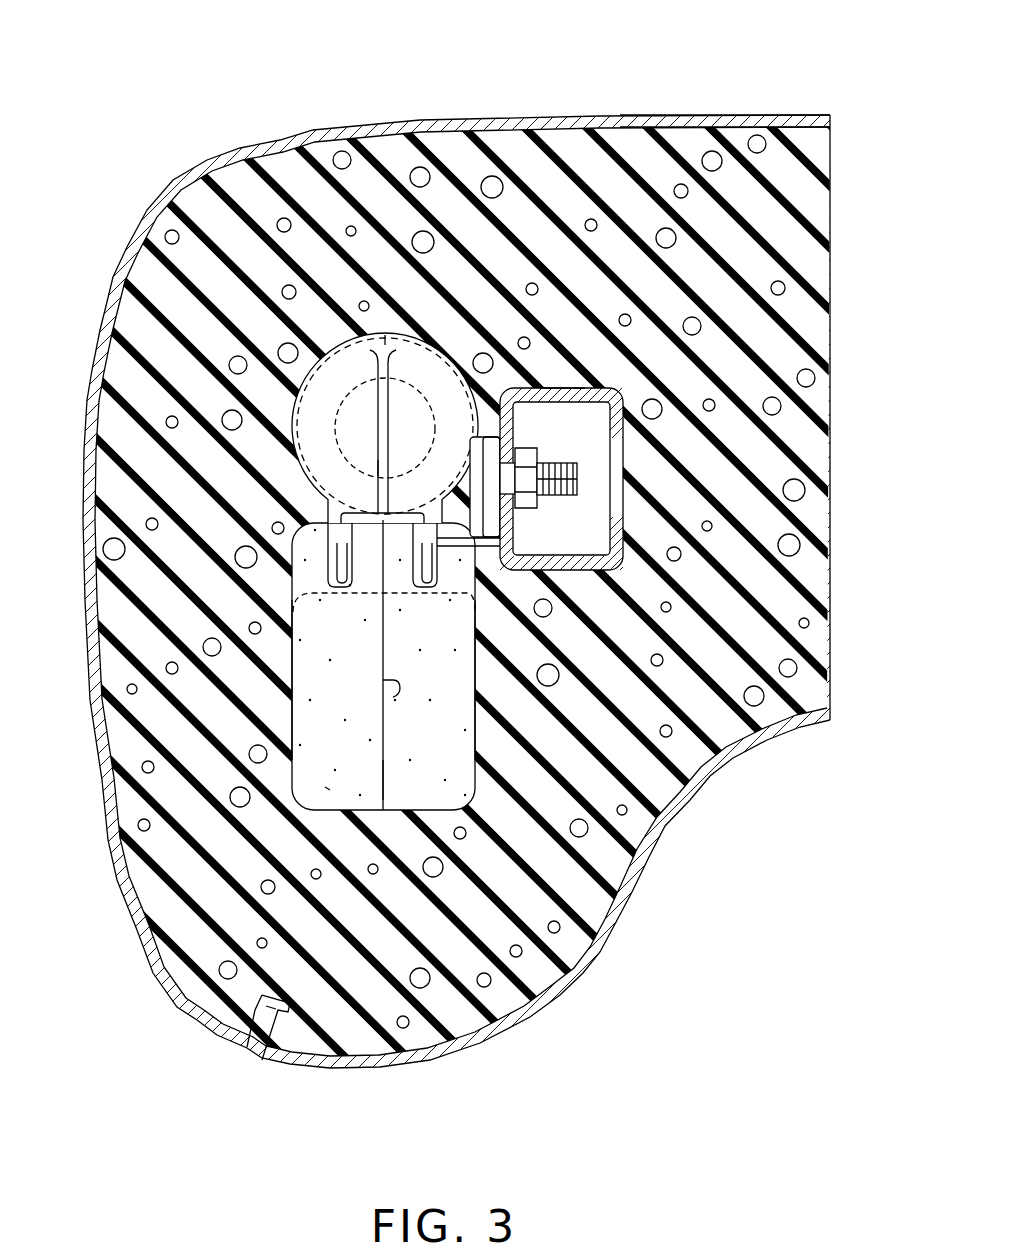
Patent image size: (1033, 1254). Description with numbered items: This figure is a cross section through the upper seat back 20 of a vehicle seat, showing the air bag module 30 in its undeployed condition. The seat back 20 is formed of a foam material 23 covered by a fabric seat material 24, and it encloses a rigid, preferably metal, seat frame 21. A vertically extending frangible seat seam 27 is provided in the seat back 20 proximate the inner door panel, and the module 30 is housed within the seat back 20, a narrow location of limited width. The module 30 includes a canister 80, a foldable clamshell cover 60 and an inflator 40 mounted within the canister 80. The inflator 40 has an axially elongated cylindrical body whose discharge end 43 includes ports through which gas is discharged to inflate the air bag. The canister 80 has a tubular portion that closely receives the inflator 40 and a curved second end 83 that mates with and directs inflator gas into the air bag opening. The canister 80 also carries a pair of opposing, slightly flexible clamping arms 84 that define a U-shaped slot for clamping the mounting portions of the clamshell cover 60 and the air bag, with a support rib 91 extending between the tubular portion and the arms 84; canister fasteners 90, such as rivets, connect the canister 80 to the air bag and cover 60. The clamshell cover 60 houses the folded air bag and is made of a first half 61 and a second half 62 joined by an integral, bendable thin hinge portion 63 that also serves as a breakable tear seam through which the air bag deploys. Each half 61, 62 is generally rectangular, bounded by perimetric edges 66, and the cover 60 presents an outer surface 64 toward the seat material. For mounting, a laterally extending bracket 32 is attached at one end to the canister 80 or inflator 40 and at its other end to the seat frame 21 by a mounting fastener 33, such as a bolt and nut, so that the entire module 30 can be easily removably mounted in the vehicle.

The seat back 20 is at (178, 175).
The seat frame 21 is at (562, 388).
The foam material 23 is at (828, 155).
The fabric seat material 24 is at (781, 117).
The frangible seat seam 27 is at (274, 1050).
The air bag module 30 is at (334, 338).
The bracket 32 is at (495, 520).
The mounting fastener 33 is at (553, 468).
The inflator 40 is at (290, 410).
The discharge end 43 is at (333, 442).
The clamshell cover 60 is at (452, 808).
The first half 61 is at (480, 745).
The second half 62 is at (292, 781).
The hinge portion 63 is at (390, 775).
The outer surface 64 is at (326, 788).
The perimetric edges 66 is at (396, 692).
The canister 80 is at (385, 335).
The second end 83 is at (322, 382).
The clamping arms 84 is at (341, 520).
The canister fasteners 90 is at (446, 590).
The support rib 91 is at (377, 468).